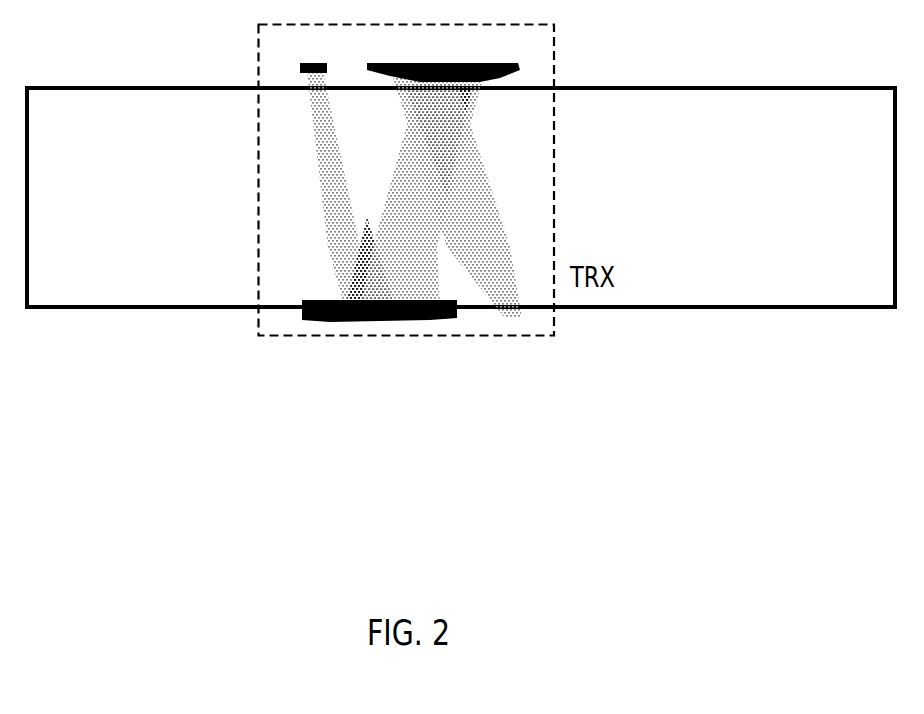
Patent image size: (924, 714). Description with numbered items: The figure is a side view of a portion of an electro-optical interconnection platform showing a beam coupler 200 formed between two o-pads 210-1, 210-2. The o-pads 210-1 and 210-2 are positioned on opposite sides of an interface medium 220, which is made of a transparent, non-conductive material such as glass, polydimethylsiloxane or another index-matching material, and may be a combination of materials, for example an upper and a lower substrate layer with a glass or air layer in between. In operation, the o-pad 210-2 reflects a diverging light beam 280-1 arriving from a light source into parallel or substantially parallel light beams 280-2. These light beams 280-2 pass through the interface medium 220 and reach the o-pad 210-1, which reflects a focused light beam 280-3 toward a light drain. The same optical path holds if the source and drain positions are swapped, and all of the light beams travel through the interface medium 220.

The beam coupler 200 is at (554, 210).
The o-pad 210-1 is at (426, 63).
The o-pad 210-2 is at (414, 300).
The interface medium 220 is at (842, 186).
The diverging light beam 280-1 is at (326, 173).
The parallel light beams 280-2 is at (385, 155).
The focused light beam 280-3 is at (526, 126).